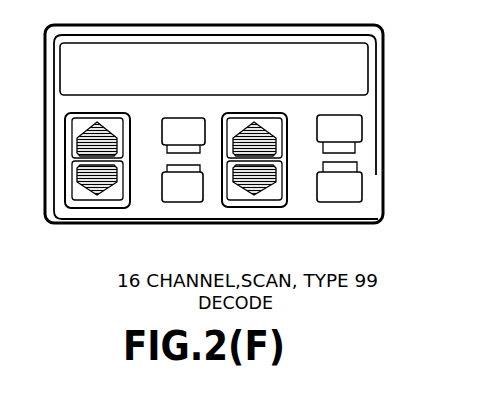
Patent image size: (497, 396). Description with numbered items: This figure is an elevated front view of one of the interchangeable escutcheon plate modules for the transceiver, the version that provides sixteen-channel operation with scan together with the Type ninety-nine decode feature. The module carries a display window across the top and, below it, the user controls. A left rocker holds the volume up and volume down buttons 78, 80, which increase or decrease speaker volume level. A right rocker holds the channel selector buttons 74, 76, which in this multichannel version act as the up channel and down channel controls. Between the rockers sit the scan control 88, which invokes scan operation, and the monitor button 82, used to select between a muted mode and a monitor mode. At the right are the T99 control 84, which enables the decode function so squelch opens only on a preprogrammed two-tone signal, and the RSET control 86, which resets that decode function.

The channel 1 selector button 74 is at (242, 117).
The channel 2 selector button 76 is at (245, 192).
The volume up button 78 is at (75, 125).
The volume down button 80 is at (73, 178).
The monitor button 82 is at (172, 202).
The T99 control 84 is at (325, 115).
The RSET control 86 is at (355, 202).
The scan control 88 is at (164, 117).